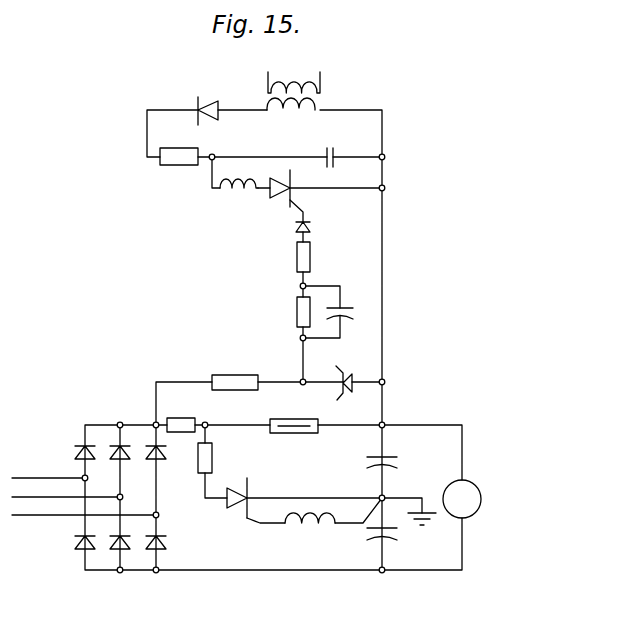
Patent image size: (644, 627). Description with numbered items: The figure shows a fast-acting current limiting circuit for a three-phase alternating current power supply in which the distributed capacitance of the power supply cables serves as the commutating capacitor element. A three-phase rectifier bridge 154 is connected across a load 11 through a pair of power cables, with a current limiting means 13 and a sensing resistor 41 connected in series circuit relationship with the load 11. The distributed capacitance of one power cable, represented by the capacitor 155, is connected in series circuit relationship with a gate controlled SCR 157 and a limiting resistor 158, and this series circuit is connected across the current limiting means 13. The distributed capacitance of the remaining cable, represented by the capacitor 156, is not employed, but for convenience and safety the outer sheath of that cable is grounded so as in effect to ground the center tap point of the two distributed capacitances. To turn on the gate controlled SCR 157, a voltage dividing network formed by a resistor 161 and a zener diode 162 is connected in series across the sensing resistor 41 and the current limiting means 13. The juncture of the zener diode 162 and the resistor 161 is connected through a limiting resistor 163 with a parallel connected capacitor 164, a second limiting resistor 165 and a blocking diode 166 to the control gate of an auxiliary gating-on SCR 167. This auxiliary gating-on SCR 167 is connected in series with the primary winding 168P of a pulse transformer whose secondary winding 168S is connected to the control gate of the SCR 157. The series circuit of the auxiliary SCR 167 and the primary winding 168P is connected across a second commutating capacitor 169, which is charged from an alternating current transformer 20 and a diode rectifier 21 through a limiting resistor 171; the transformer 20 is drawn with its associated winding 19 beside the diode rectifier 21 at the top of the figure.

The load 11 is at (481, 498).
The current limiting means 13 is at (289, 418).
The primary winding 19 is at (291, 112).
The alternating current transformer 20 is at (321, 98).
The diode rectifier 21 is at (205, 104).
The sensing resistor 41 is at (177, 417).
The three-phase rectifier bridge 154 is at (148, 495).
The capacitor 155 is at (389, 458).
The capacitor 156 is at (385, 541).
The gate controlled SCR 157 is at (250, 478).
The limiting resistor 158 is at (213, 455).
The resistor 161 is at (228, 378).
The zener diode 162 is at (347, 372).
The limiting resistor 163 is at (296, 315).
The capacitor 164 is at (345, 307).
The second limiting resistor 165 is at (311, 258).
The blocking diode 166 is at (312, 228).
The auxiliary gating-on SCR 167 is at (286, 197).
The primary winding of pulse transformer 168P is at (224, 197).
The secondary winding of pulse transformer 168S is at (312, 532).
The second commutating capacitor 169 is at (326, 153).
The limiting resistor 171 is at (168, 154).